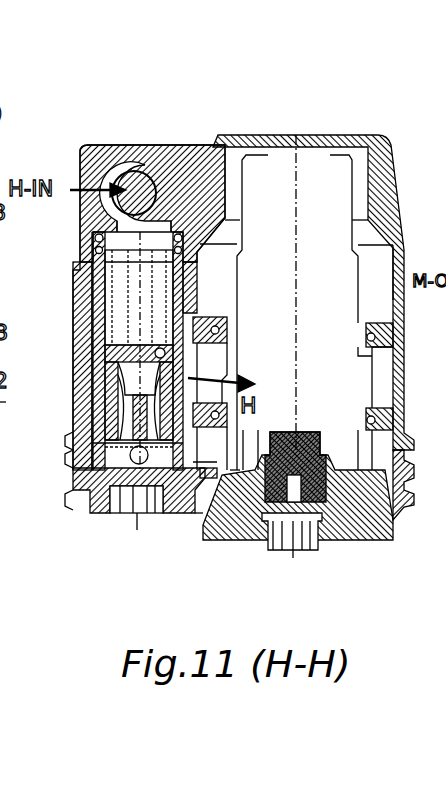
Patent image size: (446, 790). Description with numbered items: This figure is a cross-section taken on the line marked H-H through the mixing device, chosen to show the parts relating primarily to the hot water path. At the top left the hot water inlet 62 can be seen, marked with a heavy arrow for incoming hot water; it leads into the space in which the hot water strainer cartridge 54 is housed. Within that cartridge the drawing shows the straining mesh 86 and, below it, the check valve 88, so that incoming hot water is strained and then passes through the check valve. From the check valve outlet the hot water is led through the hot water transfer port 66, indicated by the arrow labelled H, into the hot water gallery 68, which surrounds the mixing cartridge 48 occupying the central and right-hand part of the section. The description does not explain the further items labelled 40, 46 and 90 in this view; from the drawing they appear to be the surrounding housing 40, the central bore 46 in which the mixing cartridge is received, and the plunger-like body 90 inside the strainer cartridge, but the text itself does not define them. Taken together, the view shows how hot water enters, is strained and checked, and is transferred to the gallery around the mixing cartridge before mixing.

The housing cap 40 is at (384, 159).
The chamber 46 is at (282, 305).
The mixing cartridge 48 is at (383, 277).
The hot water strainer cartridge 54 is at (76, 408).
The hot water inlet 62 is at (124, 176).
The hot water transfer port 66 is at (193, 370).
The hot water gallery 68 is at (378, 390).
The straining mesh 86 is at (84, 263).
The check valve 88 is at (132, 397).
The plunger 90 is at (127, 293).